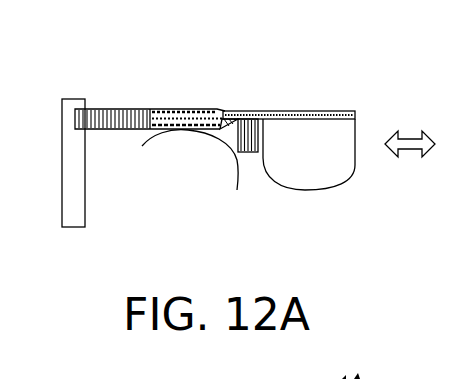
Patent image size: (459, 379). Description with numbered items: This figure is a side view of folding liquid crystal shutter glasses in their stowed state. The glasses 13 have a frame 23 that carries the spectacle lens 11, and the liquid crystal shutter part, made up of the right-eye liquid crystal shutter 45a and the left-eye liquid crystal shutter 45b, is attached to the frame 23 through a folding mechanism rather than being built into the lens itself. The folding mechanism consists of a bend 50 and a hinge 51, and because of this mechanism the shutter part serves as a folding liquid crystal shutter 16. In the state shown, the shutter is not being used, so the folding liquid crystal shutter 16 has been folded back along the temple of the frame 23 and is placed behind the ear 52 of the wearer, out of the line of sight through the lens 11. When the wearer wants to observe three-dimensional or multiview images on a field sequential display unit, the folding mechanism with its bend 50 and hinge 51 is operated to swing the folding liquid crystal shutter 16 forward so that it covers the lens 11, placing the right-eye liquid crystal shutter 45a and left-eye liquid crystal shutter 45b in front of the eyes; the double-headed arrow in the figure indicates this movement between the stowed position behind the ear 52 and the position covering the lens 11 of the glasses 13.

The glasses 13 is at (55, 90).
The lens 11 is at (82, 202).
The frame 23 is at (120, 108).
The hinge 51 is at (162, 96).
The folding liquid crystal shutter 16 is at (281, 105).
The right-eye liquid crystal shutter 45a is at (289, 90).
The left-eye liquid crystal shutter 45b is at (298, 133).
The bend 50 is at (247, 143).
The ear 52 is at (153, 140).